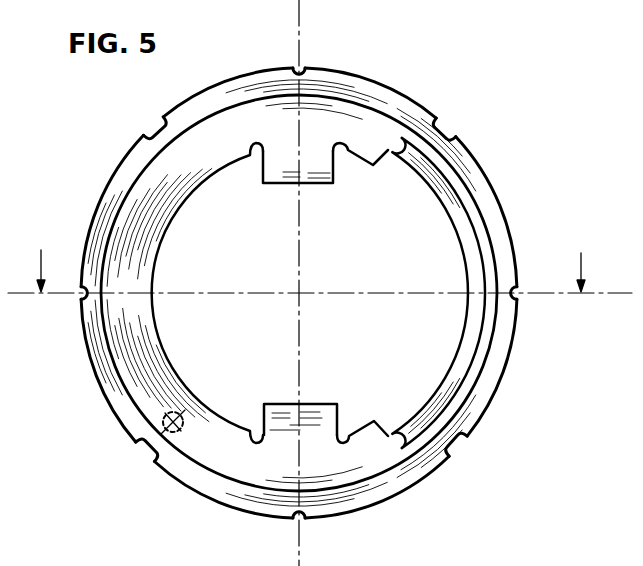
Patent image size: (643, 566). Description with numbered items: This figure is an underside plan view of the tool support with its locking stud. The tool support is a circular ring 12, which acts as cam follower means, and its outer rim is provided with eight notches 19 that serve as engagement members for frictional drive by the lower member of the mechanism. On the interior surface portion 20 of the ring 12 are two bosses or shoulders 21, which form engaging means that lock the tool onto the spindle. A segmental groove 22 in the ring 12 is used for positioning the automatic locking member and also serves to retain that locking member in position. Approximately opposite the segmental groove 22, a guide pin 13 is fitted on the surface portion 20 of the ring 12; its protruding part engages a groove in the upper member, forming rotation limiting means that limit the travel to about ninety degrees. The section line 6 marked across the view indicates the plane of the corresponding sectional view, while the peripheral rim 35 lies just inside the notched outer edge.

The ring 12 is at (527, 232).
The guide pin 13 is at (166, 423).
The notches 19 is at (453, 132).
The interior surface portion 20 is at (145, 327).
The bosses or shoulders 21 is at (311, 172).
The segmental groove 22 is at (472, 350).
The flange 35 is at (410, 484).
The section line 6- 6 is at (304, 271).